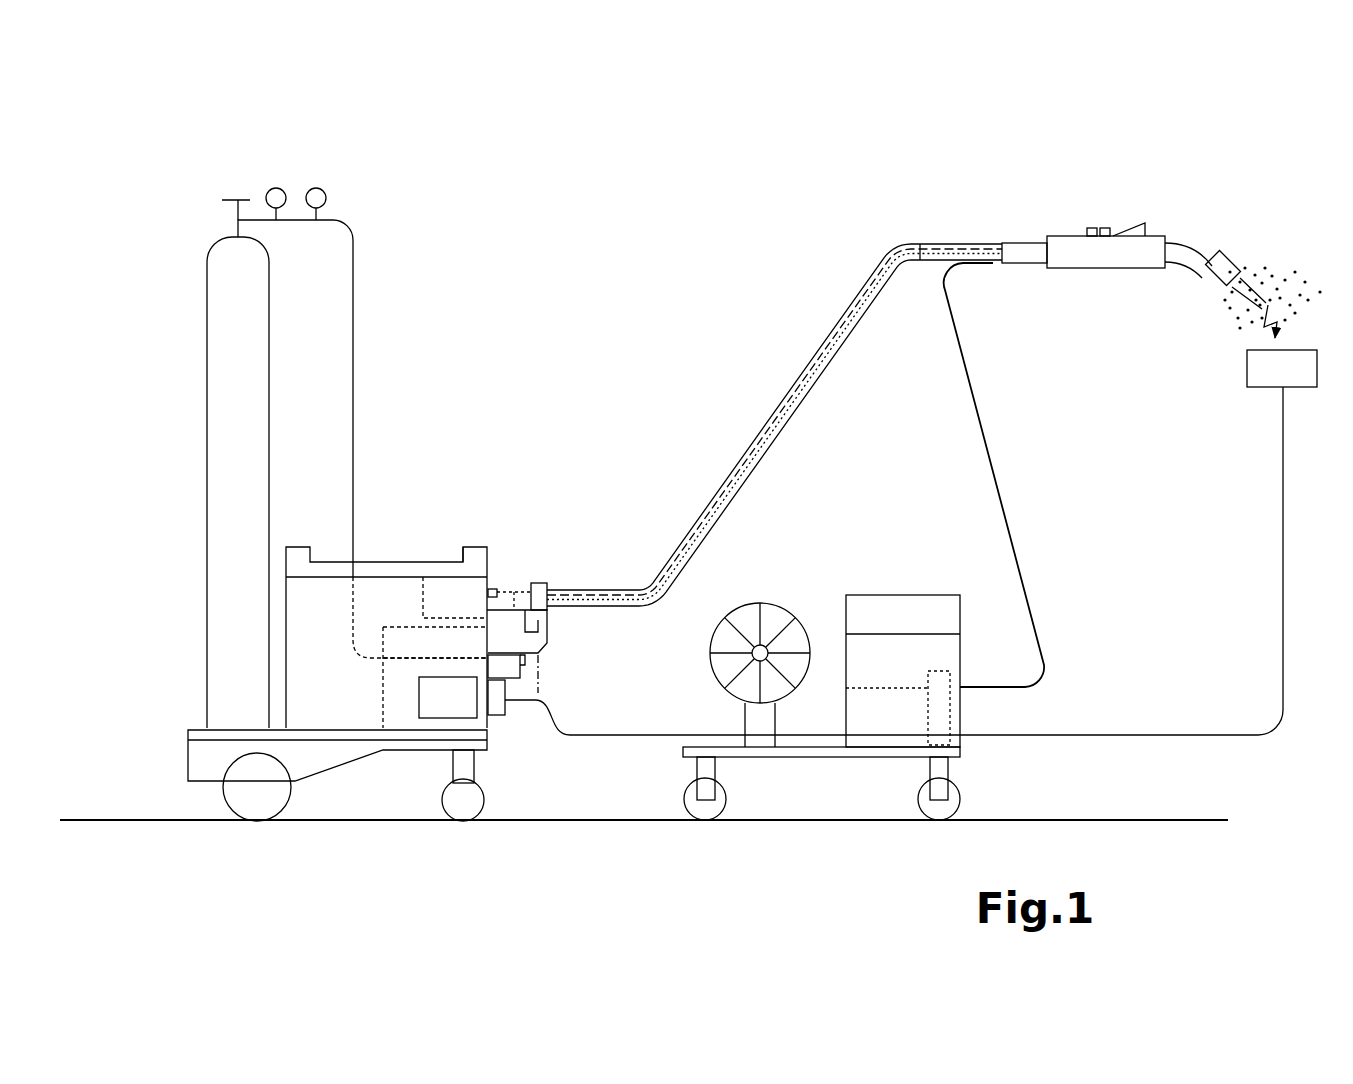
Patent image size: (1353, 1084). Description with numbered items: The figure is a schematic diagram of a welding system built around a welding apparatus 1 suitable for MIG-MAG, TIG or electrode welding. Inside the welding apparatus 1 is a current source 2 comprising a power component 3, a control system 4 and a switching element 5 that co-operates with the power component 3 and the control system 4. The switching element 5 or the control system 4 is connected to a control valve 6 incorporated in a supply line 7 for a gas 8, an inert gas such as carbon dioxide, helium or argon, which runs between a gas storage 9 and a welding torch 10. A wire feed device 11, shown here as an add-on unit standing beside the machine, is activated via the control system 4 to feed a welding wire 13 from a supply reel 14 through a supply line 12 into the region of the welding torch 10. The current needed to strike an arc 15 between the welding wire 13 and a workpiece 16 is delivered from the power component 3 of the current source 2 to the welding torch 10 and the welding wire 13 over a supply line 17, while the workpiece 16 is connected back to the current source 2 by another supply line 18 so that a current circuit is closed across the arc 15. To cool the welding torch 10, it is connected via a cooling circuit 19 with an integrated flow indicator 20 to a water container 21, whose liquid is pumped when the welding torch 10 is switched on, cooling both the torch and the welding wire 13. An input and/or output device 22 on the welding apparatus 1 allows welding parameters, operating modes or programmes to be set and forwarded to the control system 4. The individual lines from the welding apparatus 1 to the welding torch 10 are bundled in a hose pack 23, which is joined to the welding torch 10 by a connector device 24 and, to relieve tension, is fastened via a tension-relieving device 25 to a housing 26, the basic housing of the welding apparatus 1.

The welding apparatus 1 is at (365, 514).
The current source 2 is at (318, 584).
The power component 3 is at (438, 705).
The control system 4 is at (383, 693).
The switching element 5 is at (505, 735).
The control valve 6 is at (503, 670).
The supply line 7 is at (927, 262).
The gas 8 is at (1247, 245).
The gas storage 9 is at (235, 318).
The welding torch 10 is at (1121, 192).
The wire feed device 11 is at (1000, 545).
The supply line 12 is at (1005, 500).
The welding wire 13 is at (875, 690).
The supply reel 14 is at (770, 597).
The arc 15 is at (1252, 334).
The workpiece 16 is at (1292, 370).
The supply line 17 is at (774, 425).
The supply line 18 is at (1287, 585).
The cooling circuit 19 is at (705, 512).
The flow indicator 20 is at (498, 588).
The water container 21 is at (447, 590).
The input and/or output device 22 is at (475, 577).
The hose pack 23 is at (600, 590).
The connector device 24 is at (1022, 252).
The tension-relieving device 25 is at (540, 583).
The housing 26 is at (542, 623).